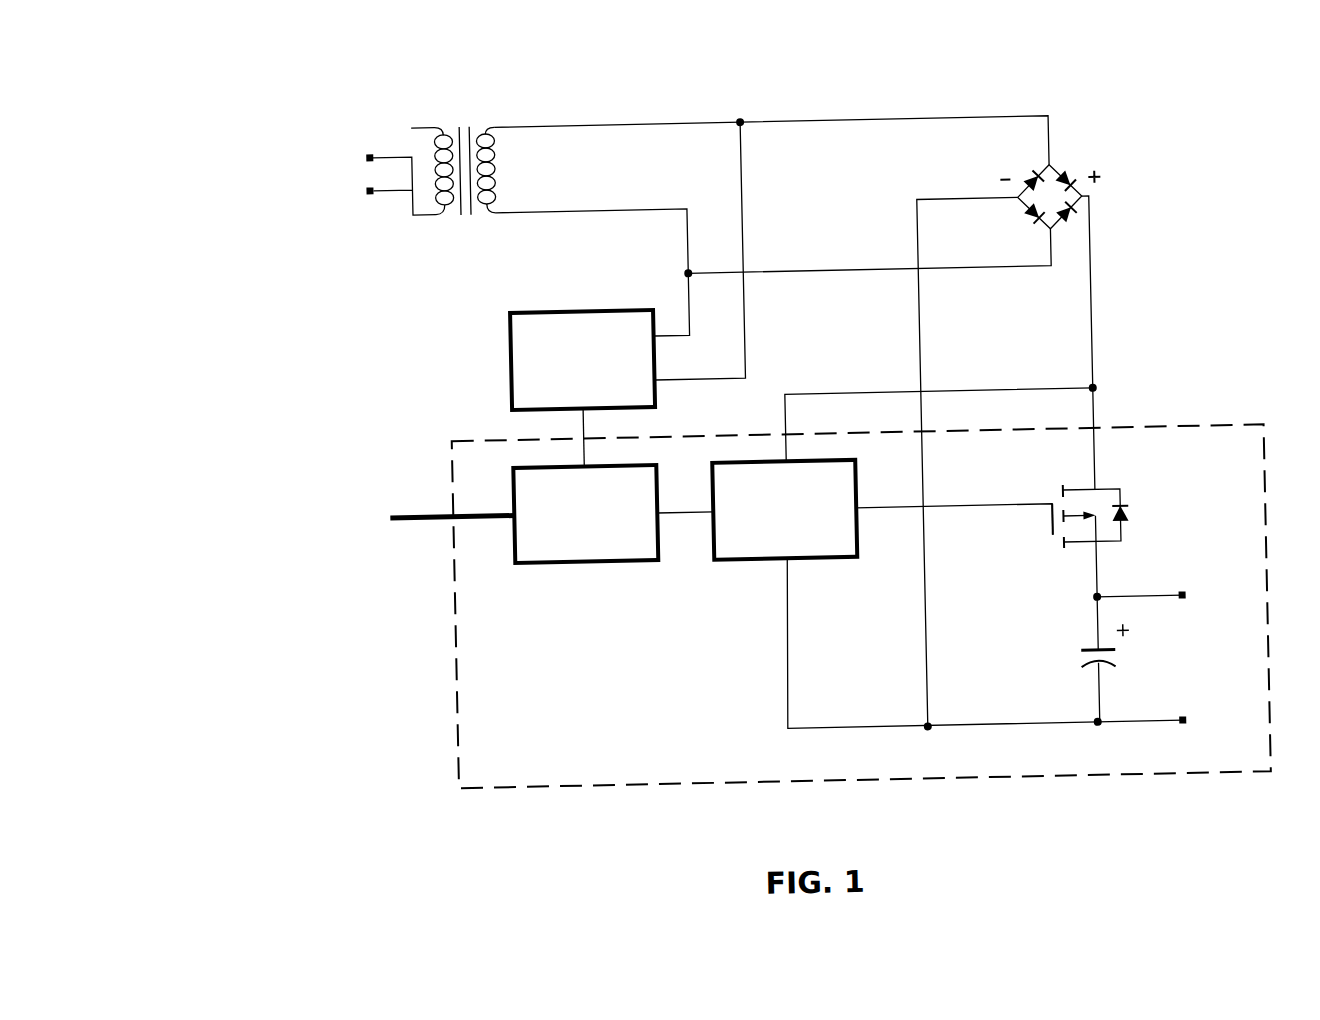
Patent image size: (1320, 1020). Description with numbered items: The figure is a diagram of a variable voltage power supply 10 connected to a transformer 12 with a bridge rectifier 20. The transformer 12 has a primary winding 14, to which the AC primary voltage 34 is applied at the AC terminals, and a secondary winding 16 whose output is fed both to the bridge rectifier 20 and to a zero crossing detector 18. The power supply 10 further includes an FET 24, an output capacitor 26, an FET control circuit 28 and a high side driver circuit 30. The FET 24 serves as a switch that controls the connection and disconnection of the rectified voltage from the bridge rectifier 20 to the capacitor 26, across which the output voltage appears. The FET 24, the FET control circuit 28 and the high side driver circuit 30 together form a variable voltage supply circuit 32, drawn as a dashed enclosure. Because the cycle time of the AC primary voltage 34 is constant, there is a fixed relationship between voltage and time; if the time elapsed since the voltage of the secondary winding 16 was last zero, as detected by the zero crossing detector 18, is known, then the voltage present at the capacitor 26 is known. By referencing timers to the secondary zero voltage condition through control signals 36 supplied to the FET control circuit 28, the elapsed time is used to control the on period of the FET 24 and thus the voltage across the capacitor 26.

The variable voltage power supply 10 is at (238, 78).
The transformer 12 is at (465, 98).
The primary winding 14 is at (428, 99).
The secondary winding 16 is at (516, 100).
The zero crossing detector 18 is at (551, 308).
The bridge rectifier 20 is at (1010, 165).
The FET 24 is at (1042, 567).
The output capacitor 26 is at (1063, 650).
The FET control circuit 28 is at (583, 558).
The high side driver circuit 30 is at (740, 557).
The variable voltage supply circuit 32 is at (533, 782).
The AC primary voltage 34 is at (340, 198).
The control signals 36 is at (426, 506).